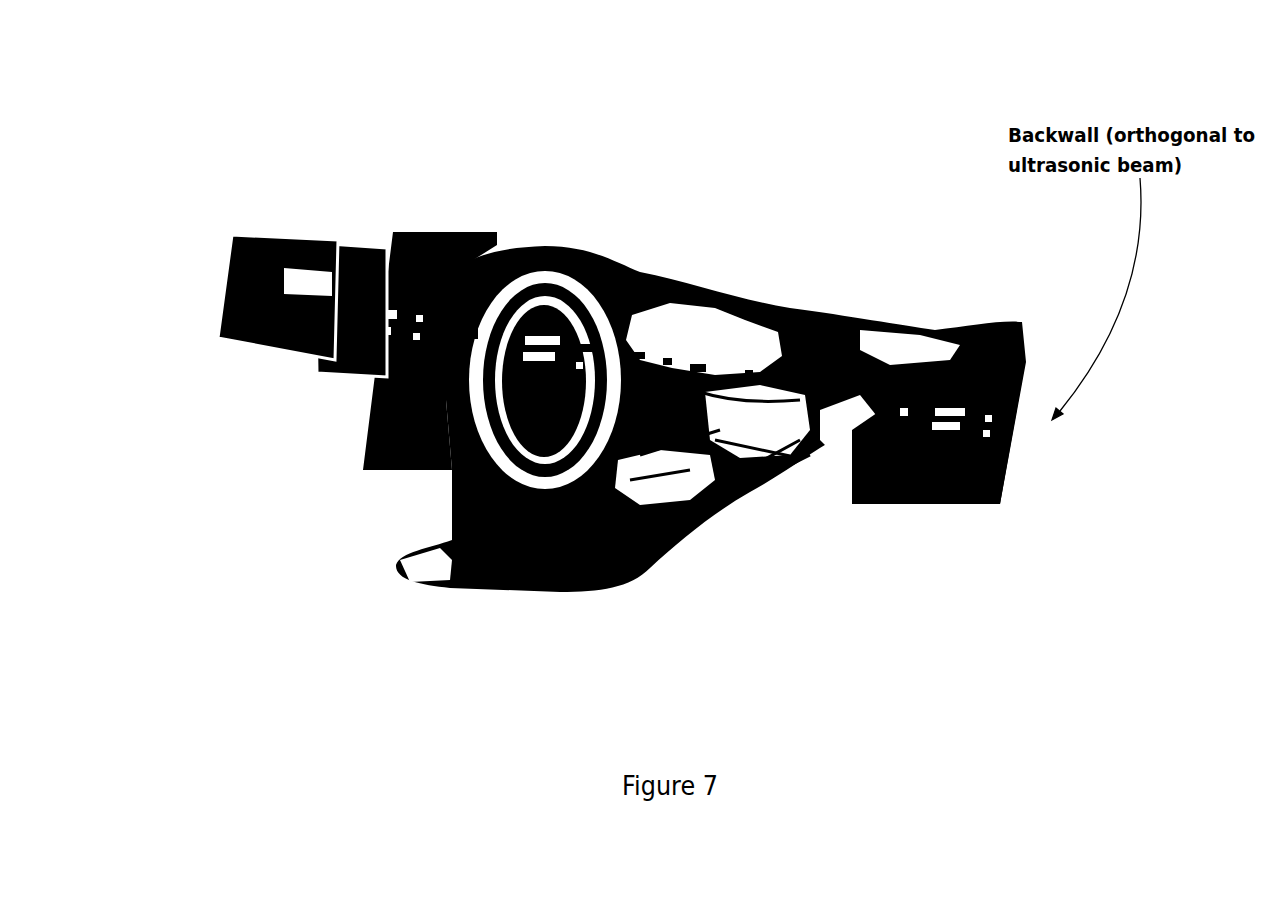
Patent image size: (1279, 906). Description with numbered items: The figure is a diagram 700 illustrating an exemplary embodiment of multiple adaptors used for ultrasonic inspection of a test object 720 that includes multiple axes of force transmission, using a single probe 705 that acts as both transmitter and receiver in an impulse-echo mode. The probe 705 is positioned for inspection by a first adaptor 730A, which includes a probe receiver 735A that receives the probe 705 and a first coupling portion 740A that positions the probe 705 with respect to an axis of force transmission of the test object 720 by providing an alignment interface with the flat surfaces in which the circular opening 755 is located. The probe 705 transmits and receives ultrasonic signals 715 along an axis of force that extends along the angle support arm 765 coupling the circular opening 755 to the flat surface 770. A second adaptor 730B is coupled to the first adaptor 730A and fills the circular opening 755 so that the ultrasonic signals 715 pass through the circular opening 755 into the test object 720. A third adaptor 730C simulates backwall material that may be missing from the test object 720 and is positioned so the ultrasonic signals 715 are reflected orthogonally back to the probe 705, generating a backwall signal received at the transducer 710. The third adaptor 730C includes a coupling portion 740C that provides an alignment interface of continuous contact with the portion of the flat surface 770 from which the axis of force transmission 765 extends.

The diagram 700 is at (179, 49).
The probe 705 is at (229, 315).
The transducer 710 is at (293, 255).
The ultrasonic signals 715 is at (636, 343).
The test object 720 is at (410, 598).
The first adaptor 730A is at (337, 463).
The second adaptor 730B is at (539, 417).
The third adaptor 730C is at (926, 531).
The probe receiver 735A is at (381, 232).
The first coupling portion 740A is at (512, 250).
The coupling portion 740C is at (874, 439).
The circular opening 755 is at (602, 336).
The angle support arm 765 is at (695, 360).
The flat surface 770 is at (779, 480).